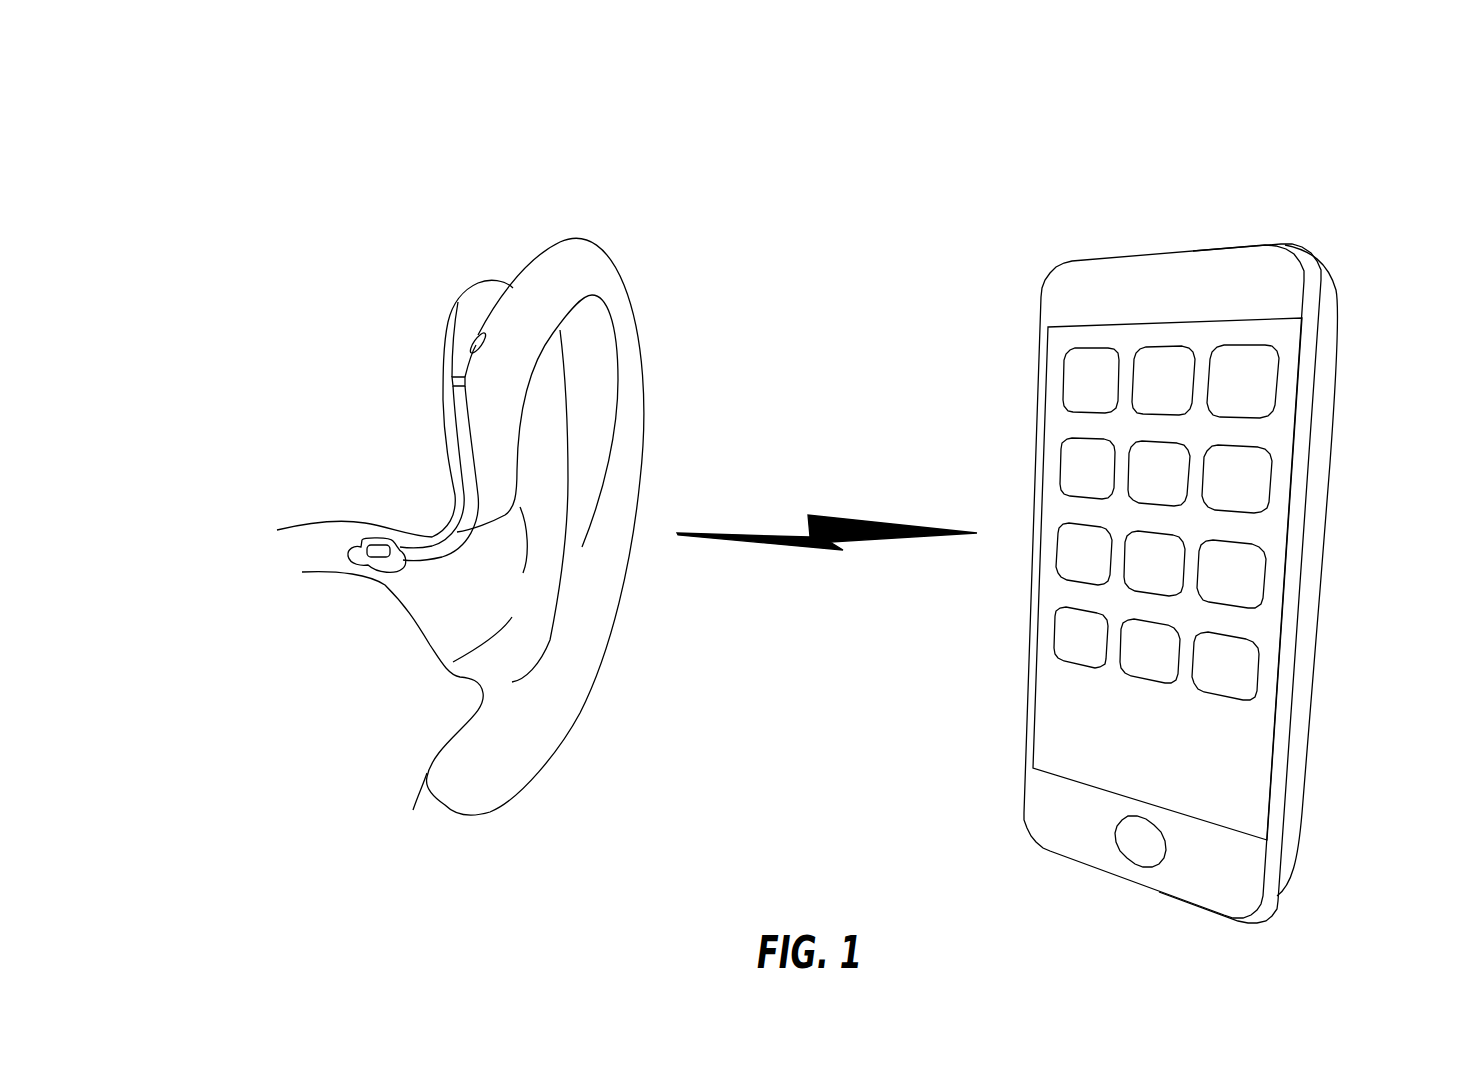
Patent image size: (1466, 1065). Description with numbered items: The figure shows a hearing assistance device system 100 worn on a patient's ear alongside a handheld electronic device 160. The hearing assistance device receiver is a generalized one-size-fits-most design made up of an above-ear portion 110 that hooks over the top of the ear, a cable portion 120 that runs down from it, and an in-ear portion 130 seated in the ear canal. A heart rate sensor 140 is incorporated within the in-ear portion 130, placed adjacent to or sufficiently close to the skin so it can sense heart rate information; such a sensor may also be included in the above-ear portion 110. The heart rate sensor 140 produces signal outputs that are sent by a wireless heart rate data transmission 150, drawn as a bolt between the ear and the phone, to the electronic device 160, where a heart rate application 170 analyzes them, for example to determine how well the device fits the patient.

The hearing assistance device system 100 is at (1396, 100).
The above-ear portion 110 is at (482, 312).
The cable portion 120 is at (472, 442).
The in-ear portion 130 is at (372, 540).
The heart rate sensor 140 is at (377, 557).
The wireless heart rate data transmission 150 is at (950, 532).
The electronic device 160 is at (1033, 448).
The heart rate application 170 is at (1088, 393).